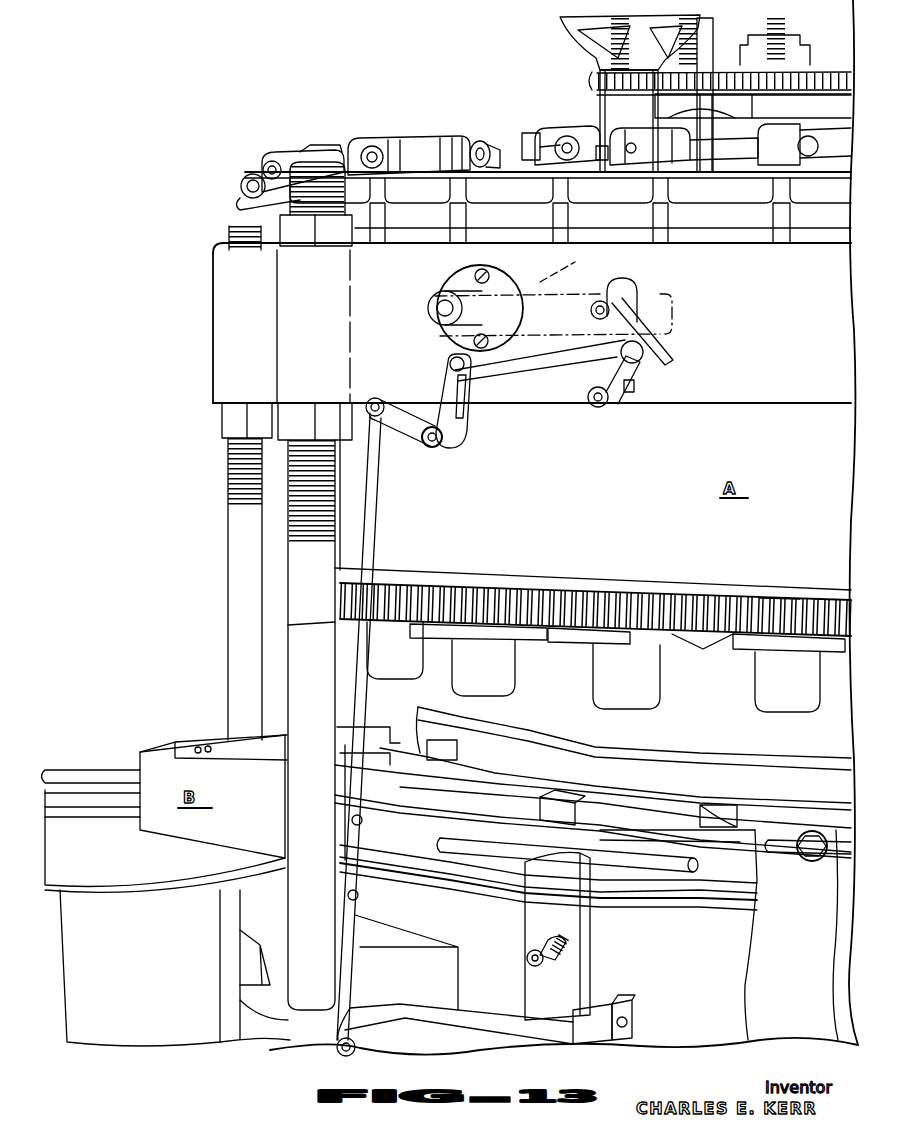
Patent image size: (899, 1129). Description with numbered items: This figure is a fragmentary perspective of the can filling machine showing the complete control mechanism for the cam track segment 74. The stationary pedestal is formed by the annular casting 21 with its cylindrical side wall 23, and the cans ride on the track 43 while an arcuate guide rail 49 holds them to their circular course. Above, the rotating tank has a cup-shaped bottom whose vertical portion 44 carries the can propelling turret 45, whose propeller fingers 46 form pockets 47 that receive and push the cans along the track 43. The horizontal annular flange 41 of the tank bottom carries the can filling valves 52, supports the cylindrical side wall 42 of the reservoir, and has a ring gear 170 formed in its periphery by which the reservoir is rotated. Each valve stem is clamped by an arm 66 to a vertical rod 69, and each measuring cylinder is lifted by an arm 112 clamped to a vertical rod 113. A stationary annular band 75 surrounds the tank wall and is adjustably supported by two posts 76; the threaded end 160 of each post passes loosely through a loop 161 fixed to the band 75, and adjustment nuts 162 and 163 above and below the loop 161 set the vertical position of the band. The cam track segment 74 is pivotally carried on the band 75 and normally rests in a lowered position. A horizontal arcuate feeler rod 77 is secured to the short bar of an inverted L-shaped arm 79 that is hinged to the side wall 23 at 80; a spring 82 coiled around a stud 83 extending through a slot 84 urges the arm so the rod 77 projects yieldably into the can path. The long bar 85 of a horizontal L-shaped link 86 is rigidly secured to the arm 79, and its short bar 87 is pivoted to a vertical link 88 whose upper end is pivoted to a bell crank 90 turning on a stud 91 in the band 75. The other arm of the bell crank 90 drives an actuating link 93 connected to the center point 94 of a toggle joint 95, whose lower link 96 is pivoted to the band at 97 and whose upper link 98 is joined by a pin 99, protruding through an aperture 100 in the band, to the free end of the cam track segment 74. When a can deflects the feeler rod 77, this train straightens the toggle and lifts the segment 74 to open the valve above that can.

The annular casting 21 is at (718, 1012).
The cylindrical side wall 23 is at (670, 1022).
The horizontal annular flange 41 is at (783, 600).
The cylindrical side wall 42 is at (676, 546).
The track 43 is at (740, 874).
The vertical portion 44 is at (732, 732).
The can propelling turret 45 is at (660, 783).
The propeller fingers 46 is at (395, 748).
The pockets 47 is at (512, 806).
The arcuate guide rail 49 is at (740, 840).
The can filling valves 52 is at (407, 659).
The arm 66 is at (241, 186).
The rod or bar 69 is at (462, 216).
The cam track segment 74 is at (612, 290).
The stationary annular band 75 is at (776, 310).
The posts 76 is at (243, 582).
The arcuate rod 77 is at (655, 855).
The arm 79 is at (603, 928).
The hinge 80 is at (616, 1012).
The spring 82 is at (556, 953).
The stud 83 is at (537, 967).
The slot 84 is at (550, 938).
The long bar 85 is at (545, 1030).
The L-shaped link 86 is at (470, 1025).
The short bar 87 is at (388, 1028).
The vertical link 88 is at (374, 512).
The bell crank 90 is at (445, 382).
The stud 91 is at (428, 442).
The actuating link 93 is at (542, 364).
The center point 94 is at (643, 352).
The toggle joint 95 is at (640, 388).
The lower link 96 is at (620, 405).
The pivot 97 is at (598, 408).
The upper link 98 is at (630, 320).
The pin 99 is at (591, 311).
The aperture 100 is at (628, 294).
The arm 112 is at (298, 143).
The vertical rod 113 is at (380, 222).
The threaded end 160 is at (225, 470).
The loop 161 is at (322, 343).
The adjustment nut 162 is at (328, 243).
The adjustment nut 163 is at (232, 410).
The ring gear 170 is at (495, 608).